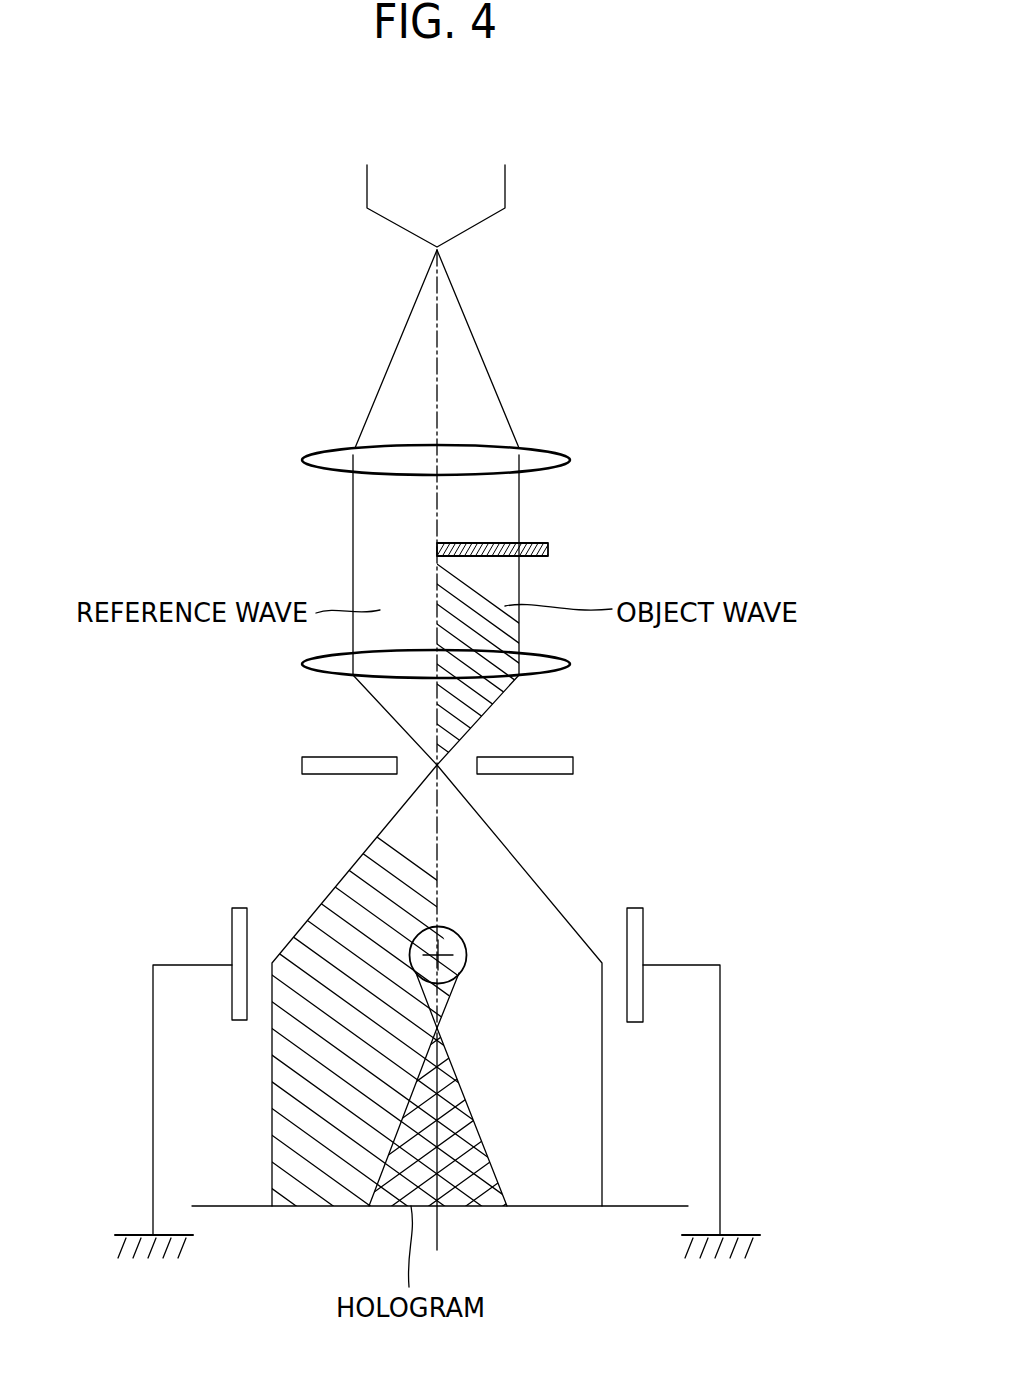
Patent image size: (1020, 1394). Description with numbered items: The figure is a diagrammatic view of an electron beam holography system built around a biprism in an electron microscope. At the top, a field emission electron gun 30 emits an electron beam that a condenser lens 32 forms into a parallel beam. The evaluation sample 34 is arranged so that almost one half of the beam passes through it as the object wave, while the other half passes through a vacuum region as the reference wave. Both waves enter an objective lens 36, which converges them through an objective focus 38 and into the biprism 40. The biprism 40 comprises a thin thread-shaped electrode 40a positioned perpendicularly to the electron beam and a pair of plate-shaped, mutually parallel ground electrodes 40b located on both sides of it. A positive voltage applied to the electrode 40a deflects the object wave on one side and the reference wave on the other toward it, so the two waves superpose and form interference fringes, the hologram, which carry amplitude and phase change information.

The field emission electron gun 30 is at (505, 193).
The condenser lens 32 is at (570, 460).
The evaluation sample 34 is at (548, 550).
The objective lens 36 is at (570, 664).
The objective focus 38 is at (573, 767).
The biprism 40 is at (788, 946).
The electrode 40a is at (458, 933).
The ground electrodes 40b is at (232, 928).